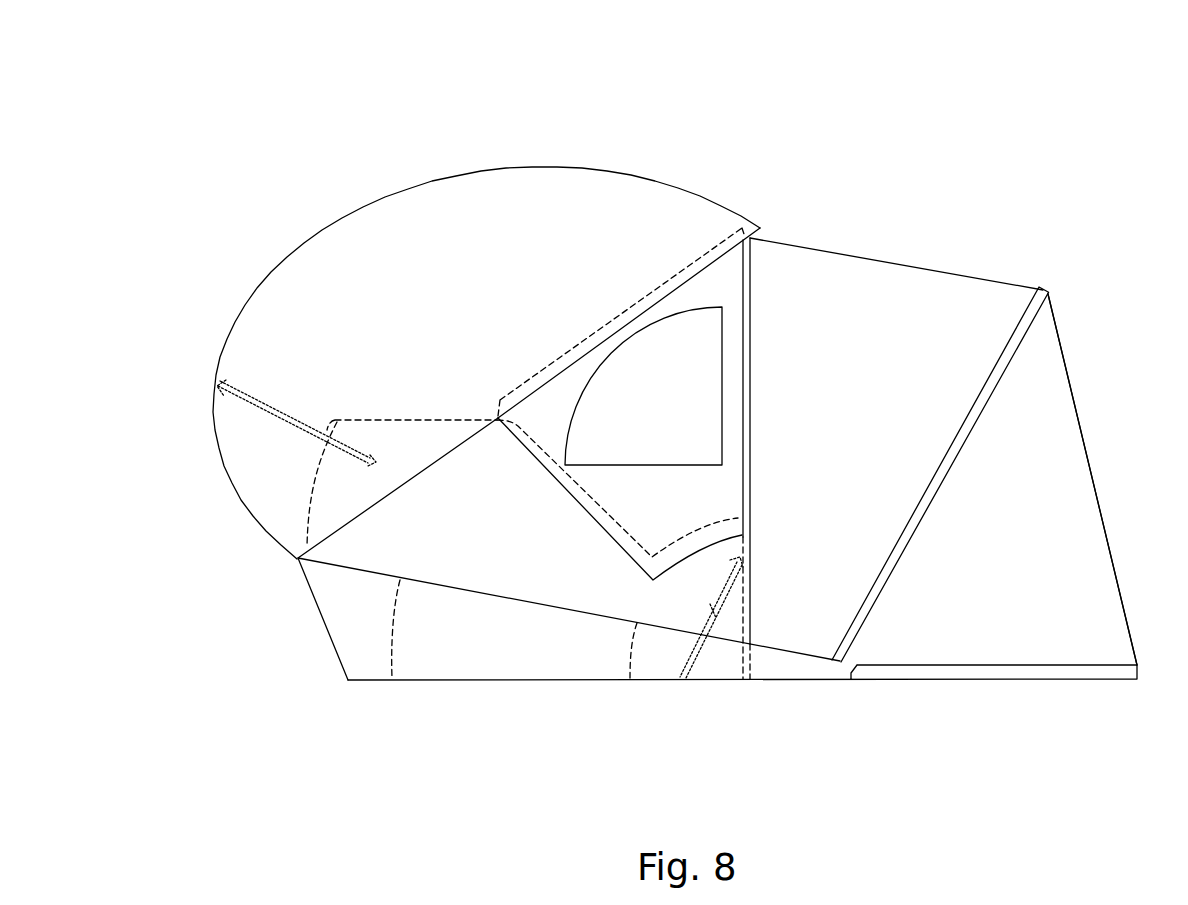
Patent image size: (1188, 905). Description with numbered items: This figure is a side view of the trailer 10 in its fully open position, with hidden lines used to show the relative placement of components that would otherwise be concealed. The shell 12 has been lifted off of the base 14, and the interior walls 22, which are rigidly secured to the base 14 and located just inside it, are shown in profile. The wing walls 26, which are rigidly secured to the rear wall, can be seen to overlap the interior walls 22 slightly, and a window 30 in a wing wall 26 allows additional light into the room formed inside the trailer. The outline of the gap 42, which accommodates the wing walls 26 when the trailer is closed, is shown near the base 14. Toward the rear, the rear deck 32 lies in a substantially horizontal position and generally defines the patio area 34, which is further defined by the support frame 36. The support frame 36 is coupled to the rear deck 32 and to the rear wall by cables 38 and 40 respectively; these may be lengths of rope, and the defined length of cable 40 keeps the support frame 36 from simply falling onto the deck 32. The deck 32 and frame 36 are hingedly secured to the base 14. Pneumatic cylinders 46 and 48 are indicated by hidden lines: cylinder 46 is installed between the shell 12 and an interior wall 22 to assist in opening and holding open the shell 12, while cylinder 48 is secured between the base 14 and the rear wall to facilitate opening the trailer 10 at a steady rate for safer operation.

The trailer 10 is at (946, 128).
The shell 12 is at (423, 222).
The base 14 is at (367, 620).
The interior walls 22 is at (572, 568).
The wing walls 26 is at (663, 497).
The window 30 is at (675, 375).
The rear deck 32 is at (933, 679).
The patio area 34 is at (1078, 331).
The support frame 36 is at (1006, 350).
The cable 38 is at (1084, 447).
The cable 40 is at (848, 253).
The gap 42 is at (473, 605).
The pneumatic cylinder 46 is at (322, 430).
The pneumatic cylinder 48 is at (713, 617).